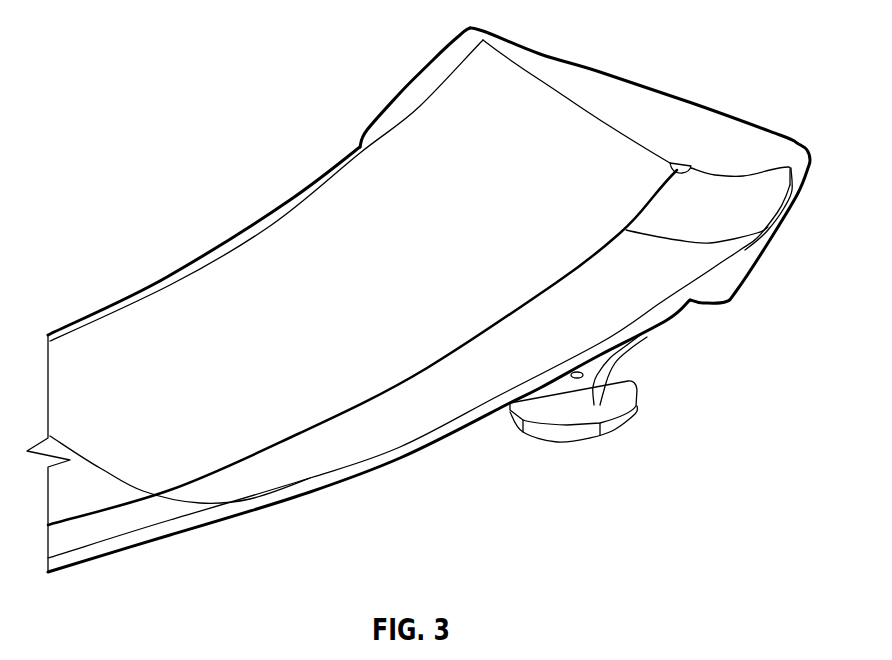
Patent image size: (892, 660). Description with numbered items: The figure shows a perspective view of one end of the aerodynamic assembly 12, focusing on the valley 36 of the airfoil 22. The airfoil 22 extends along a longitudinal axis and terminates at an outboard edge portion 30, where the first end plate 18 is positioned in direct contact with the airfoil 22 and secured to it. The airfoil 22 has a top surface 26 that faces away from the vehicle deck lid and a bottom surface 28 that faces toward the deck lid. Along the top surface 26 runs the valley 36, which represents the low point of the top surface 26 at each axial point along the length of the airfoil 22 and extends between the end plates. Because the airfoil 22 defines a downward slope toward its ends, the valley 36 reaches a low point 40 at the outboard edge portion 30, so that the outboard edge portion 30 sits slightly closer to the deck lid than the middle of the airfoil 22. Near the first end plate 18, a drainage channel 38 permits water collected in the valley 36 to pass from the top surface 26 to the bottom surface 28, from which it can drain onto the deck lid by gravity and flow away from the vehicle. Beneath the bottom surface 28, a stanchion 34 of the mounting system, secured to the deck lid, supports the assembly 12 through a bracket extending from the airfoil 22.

The aerodynamic assembly 12 is at (171, 123).
The first end plate 18 is at (672, 110).
The airfoil 22 is at (127, 328).
The top surface 26 is at (363, 438).
The bottom surface 28 is at (355, 477).
The outboard edge portion 30 is at (476, 82).
The stanchion 34 is at (587, 385).
The valley 36 is at (424, 382).
The drainage channel 38 is at (672, 163).
The low point 40 is at (688, 177).